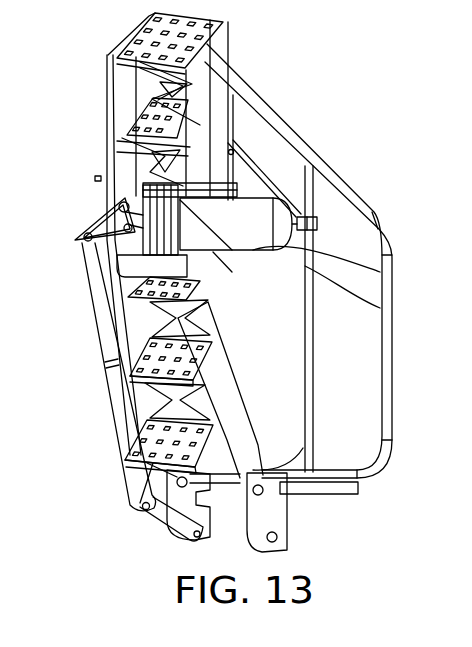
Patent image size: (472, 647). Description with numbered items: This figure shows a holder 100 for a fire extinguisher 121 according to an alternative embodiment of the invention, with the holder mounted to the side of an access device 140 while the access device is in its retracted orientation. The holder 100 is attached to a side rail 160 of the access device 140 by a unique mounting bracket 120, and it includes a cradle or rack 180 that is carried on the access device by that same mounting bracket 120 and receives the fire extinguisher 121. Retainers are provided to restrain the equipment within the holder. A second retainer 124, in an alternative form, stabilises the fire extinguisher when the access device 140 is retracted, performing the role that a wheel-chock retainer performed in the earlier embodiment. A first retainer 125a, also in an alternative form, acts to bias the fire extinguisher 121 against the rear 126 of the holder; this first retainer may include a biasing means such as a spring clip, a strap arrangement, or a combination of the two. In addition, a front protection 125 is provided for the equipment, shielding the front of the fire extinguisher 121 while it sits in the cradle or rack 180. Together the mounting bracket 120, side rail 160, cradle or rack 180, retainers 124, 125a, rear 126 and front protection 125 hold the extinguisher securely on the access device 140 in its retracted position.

The holder 100 is at (82, 241).
The mounting bracket 120 is at (250, 188).
The fire extinguisher 121 is at (310, 205).
The second retainer 124 is at (380, 272).
The front protection 125 is at (200, 127).
The first retainer 125a is at (117, 151).
The rear of the holder 126 is at (380, 308).
The access device 140 is at (224, 60).
The side rail 160 is at (220, 143).
The cradle or rack 180 is at (106, 279).